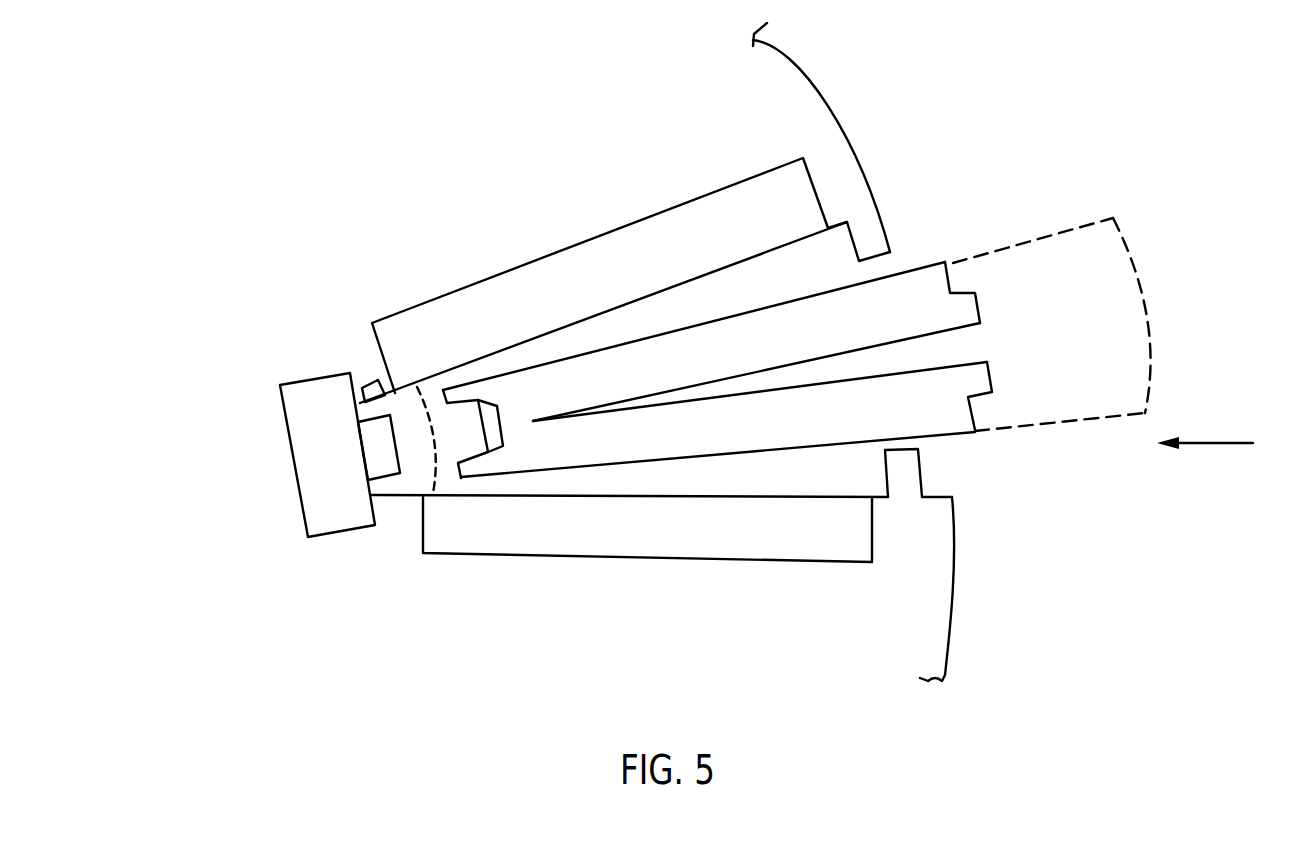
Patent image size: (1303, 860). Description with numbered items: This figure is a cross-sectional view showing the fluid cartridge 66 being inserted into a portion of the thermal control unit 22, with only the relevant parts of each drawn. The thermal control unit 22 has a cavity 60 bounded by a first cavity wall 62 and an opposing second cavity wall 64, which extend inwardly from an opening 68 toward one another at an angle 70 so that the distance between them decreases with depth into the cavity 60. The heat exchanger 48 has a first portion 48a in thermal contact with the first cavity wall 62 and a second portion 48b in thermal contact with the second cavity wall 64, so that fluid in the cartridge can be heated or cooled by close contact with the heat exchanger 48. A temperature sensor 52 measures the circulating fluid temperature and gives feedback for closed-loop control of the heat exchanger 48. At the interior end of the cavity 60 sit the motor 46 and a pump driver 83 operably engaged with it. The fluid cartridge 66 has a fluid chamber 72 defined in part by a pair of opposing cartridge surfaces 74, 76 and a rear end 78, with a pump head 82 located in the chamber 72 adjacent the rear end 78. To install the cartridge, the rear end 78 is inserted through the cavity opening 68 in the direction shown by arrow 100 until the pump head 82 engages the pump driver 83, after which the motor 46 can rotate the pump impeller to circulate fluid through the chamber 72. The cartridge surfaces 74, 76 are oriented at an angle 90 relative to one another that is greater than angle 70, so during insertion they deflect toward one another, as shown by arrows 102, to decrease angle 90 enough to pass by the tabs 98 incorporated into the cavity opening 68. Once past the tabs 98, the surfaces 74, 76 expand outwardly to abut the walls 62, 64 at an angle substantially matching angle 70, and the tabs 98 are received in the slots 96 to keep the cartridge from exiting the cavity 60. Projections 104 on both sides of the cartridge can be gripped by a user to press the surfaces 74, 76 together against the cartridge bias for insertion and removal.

The thermal control unit 22 is at (313, 138).
The motor 46 is at (292, 458).
The heat exchanger 48 is at (347, 297).
The first portion of heat exchanger 48a is at (403, 308).
The second portion of heat exchanger 48b is at (630, 558).
The temperature sensor 52 is at (365, 387).
The cavity 60 is at (557, 480).
The first cavity wall 62 is at (650, 297).
The second cavity wall 64 is at (513, 495).
The fluid cartridge 66 is at (990, 452).
The opening 68 is at (913, 443).
The angle 70 is at (433, 460).
The fluid chamber 72 is at (615, 445).
The cartridge surface 74 is at (747, 312).
The cartridge surface 76 is at (713, 455).
The rear end 78 is at (460, 470).
The pump head 82 is at (497, 420).
The pump driver 83 is at (372, 440).
The angle 90 is at (1137, 272).
The slot 96 is at (952, 273).
The tab 98 is at (872, 243).
The arrow 100 is at (1203, 443).
The arrow 102 is at (836, 333).
The projection 104 is at (977, 303).